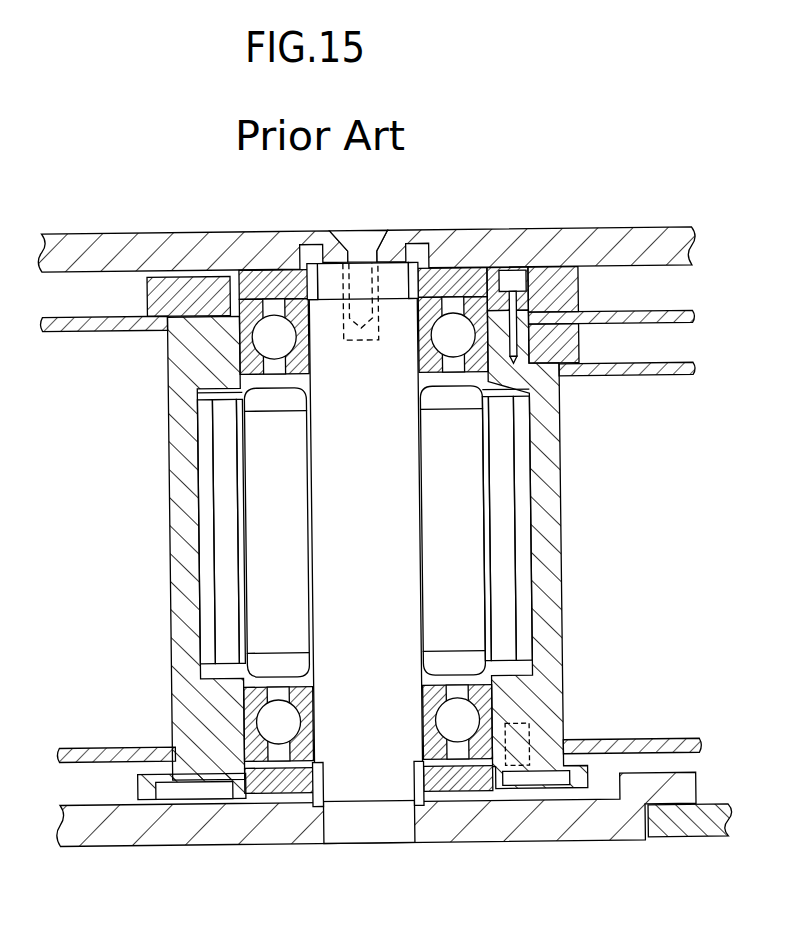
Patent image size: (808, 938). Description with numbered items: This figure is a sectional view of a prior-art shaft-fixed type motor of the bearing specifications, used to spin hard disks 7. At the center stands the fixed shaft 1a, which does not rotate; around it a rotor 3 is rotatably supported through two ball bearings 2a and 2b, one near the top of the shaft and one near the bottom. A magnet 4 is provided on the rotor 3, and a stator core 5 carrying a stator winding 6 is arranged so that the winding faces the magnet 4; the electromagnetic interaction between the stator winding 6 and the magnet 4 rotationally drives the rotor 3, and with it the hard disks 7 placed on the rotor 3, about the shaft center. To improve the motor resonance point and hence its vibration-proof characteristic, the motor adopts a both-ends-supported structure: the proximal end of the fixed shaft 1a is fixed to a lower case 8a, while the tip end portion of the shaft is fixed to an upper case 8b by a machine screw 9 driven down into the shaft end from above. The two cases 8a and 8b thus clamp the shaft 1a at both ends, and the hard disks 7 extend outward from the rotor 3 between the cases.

The fixed shaft 1a is at (408, 546).
The ball bearing 2a is at (455, 334).
The ball bearing 2b is at (455, 730).
The rotor 3 is at (557, 488).
The magnet 4 is at (510, 433).
The stator core 5 is at (272, 560).
The stator winding 6 is at (286, 665).
The hard disks 7 is at (106, 321).
The lower case 8a is at (556, 818).
The upper case 8b is at (586, 252).
The machine screw 9 is at (361, 240).